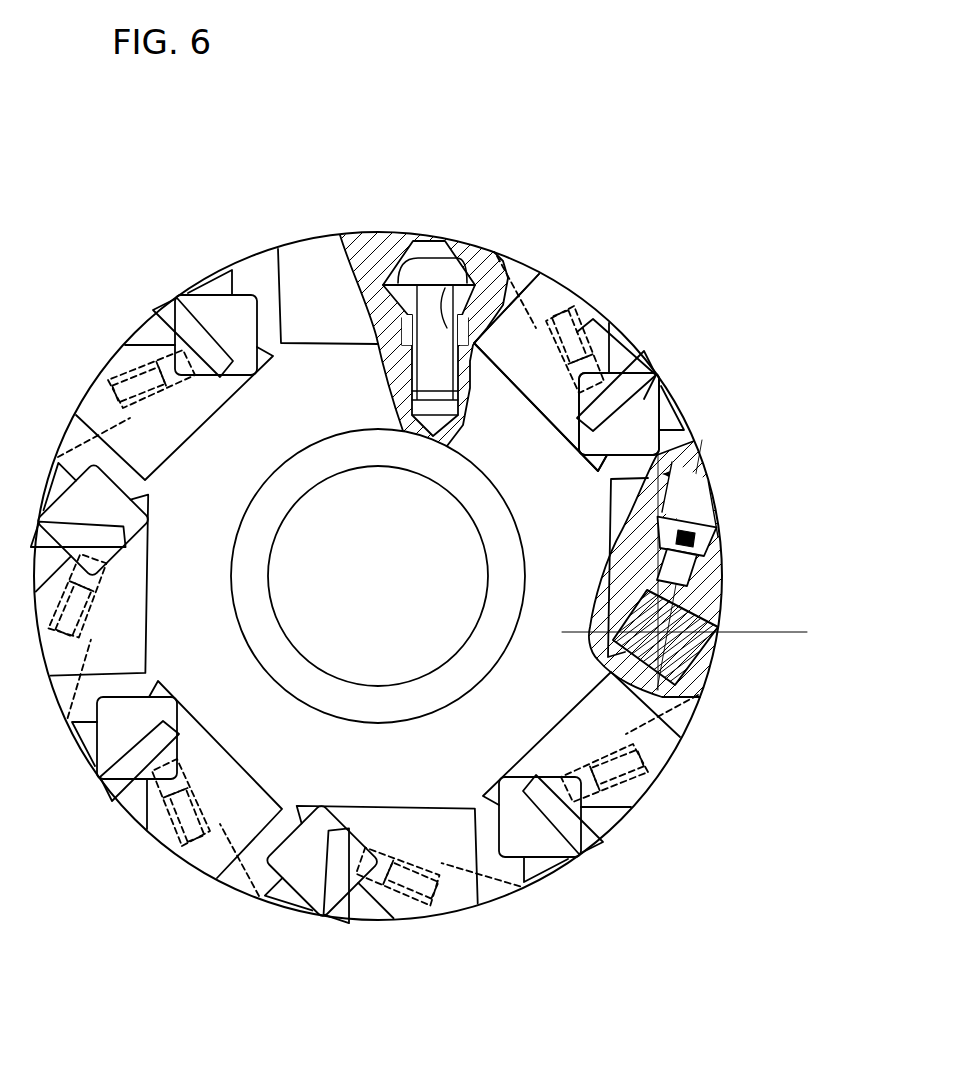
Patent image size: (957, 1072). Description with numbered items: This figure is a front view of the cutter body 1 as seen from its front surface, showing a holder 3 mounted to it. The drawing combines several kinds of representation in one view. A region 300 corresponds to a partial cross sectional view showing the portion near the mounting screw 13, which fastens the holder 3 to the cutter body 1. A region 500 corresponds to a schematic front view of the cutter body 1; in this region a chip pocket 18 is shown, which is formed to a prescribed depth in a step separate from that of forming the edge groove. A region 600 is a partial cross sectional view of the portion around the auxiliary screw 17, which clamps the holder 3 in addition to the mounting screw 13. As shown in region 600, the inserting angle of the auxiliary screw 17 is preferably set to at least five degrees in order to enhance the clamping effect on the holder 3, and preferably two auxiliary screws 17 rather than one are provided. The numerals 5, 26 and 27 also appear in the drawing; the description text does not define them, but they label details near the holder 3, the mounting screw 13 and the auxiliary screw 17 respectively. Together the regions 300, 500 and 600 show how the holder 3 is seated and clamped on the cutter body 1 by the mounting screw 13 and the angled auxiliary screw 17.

The cutter body 1 is at (267, 272).
The holder 3 is at (655, 396).
The cutting edge 5 is at (633, 350).
The mounting screw 13 is at (423, 265).
The auxiliary screw 17 is at (720, 557).
The chip pocket 18 is at (515, 350).
The screw socket 26 is at (440, 298).
The fixing screw 27 is at (718, 540).
The region 300 is at (435, 229).
The region 500 is at (654, 358).
The region 600 is at (723, 631).